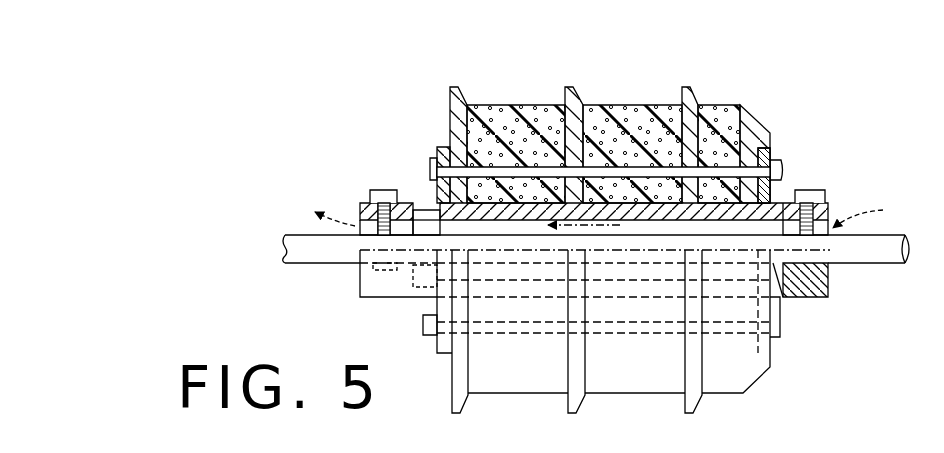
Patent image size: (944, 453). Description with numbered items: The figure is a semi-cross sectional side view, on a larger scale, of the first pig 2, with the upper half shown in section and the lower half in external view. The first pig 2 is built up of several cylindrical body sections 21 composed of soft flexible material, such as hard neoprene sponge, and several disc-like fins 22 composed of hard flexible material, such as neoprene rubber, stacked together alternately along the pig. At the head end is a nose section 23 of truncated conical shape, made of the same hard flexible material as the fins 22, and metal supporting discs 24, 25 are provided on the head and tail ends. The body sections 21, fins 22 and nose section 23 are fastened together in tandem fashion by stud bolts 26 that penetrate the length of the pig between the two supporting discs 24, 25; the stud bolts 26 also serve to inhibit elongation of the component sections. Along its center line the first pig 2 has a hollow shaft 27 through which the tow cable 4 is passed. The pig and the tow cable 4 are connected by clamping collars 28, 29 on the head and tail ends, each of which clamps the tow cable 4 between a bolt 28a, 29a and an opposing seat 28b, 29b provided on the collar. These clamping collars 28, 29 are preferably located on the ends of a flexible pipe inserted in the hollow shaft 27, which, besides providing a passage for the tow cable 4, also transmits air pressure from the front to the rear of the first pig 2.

The first pig 2 is at (617, 112).
The tow cable 4 is at (882, 240).
The cylindrical body sections 21 is at (519, 105).
The disc-like fins 22 is at (458, 86).
The nose section 23 is at (761, 127).
The metal supporting disc 24 is at (773, 152).
The metal supporting disc 25 is at (444, 148).
The stud bolts 26 is at (790, 202).
The hollow shaft 27 is at (480, 226).
The clamping collar 28 is at (828, 214).
The bolt 28a is at (825, 191).
The seat 28b is at (828, 283).
The clamping collar 29 is at (361, 206).
The bolt 29a is at (383, 192).
The seat 29b is at (376, 285).